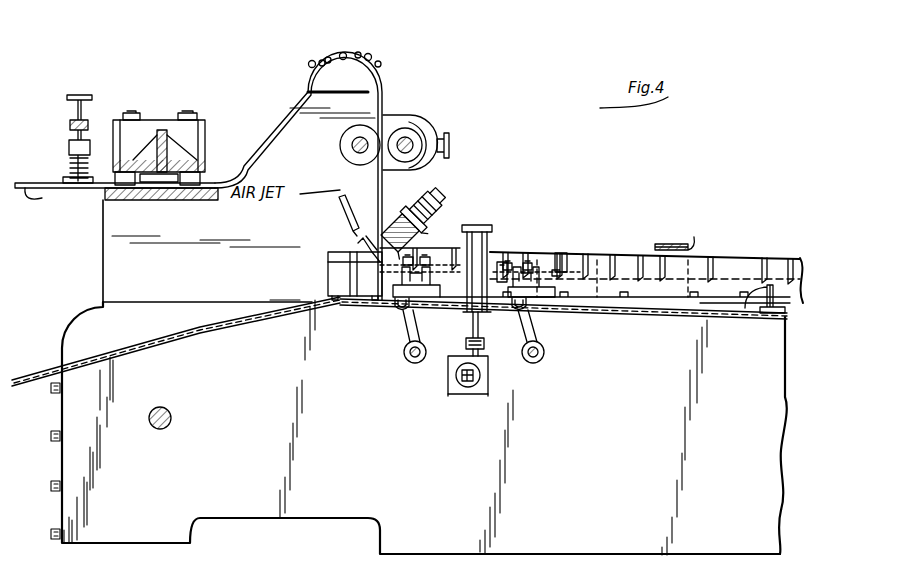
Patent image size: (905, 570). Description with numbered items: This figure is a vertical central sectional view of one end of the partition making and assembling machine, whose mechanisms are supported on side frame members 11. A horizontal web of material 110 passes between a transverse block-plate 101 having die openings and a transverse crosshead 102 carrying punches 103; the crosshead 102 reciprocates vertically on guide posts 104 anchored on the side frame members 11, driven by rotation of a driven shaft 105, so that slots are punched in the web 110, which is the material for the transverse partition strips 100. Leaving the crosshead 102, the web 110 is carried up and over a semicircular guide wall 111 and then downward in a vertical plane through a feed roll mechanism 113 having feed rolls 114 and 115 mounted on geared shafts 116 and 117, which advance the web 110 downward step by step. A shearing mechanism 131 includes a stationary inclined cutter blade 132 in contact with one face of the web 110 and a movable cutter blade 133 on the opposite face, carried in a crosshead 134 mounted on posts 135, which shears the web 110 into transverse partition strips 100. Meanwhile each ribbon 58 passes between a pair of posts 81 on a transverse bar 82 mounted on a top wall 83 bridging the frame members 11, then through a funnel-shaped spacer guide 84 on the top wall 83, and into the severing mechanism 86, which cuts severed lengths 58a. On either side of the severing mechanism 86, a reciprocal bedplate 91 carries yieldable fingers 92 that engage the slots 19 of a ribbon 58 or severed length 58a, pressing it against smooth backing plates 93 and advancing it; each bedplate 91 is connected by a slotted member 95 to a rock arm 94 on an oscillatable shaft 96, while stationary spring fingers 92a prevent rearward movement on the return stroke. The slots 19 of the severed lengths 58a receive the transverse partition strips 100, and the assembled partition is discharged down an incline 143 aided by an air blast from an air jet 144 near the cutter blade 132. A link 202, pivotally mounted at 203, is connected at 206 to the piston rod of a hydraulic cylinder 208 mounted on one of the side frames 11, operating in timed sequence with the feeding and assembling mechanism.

The side frame members 11 is at (278, 519).
The slots 19 is at (789, 259).
The ribbons 58 is at (626, 254).
The severed lengths 58a is at (328, 278).
The posts 81 is at (744, 313).
The transverse bar 82 is at (771, 314).
The top wall 83 is at (592, 311).
The spacer guide 84 is at (661, 238).
The severing mechanism 86 is at (478, 219).
The bedplate 91 is at (424, 298).
The yieldable fingers 92 is at (520, 260).
The stationary spring fingers 92a is at (505, 262).
The backing plates 93 is at (566, 254).
The rock arm 94 is at (406, 326).
The slotted member 95 is at (402, 308).
The oscillatably rotatable shafts 96 is at (404, 357).
The transverse partition strips 100 is at (354, 297).
The block-plate 101 is at (170, 201).
The crosshead 102 is at (152, 128).
The punches 103 is at (175, 167).
The guide posts 104 is at (131, 113).
The driven shaft 105 is at (158, 405).
The web of material 110 is at (28, 183).
The guide wall 111 is at (352, 60).
The feed roll mechanism 113 is at (401, 109).
The feed roll 114 is at (348, 152).
The feed roll 115 is at (409, 128).
The shaft 116 is at (353, 143).
The shaft 117 is at (412, 158).
The shearing mechanism 131 is at (430, 213).
The stationary inclined cutter blade 132 is at (365, 242).
The movable cutter blade 133 is at (398, 204).
The crosshead 134 is at (422, 222).
The posts 135 is at (419, 191).
The incline 143 is at (158, 330).
The air jet 144 is at (352, 222).
The link 202 is at (488, 374).
The pivotal mounting 203 is at (465, 346).
The connection 206 is at (462, 377).
The hydraulic cylinder 208 is at (456, 396).